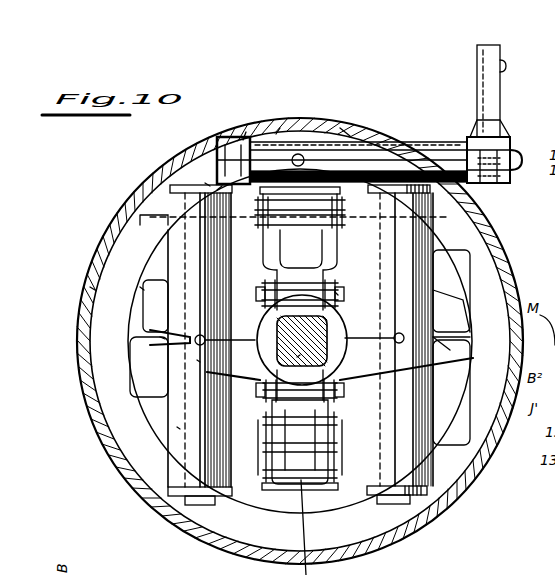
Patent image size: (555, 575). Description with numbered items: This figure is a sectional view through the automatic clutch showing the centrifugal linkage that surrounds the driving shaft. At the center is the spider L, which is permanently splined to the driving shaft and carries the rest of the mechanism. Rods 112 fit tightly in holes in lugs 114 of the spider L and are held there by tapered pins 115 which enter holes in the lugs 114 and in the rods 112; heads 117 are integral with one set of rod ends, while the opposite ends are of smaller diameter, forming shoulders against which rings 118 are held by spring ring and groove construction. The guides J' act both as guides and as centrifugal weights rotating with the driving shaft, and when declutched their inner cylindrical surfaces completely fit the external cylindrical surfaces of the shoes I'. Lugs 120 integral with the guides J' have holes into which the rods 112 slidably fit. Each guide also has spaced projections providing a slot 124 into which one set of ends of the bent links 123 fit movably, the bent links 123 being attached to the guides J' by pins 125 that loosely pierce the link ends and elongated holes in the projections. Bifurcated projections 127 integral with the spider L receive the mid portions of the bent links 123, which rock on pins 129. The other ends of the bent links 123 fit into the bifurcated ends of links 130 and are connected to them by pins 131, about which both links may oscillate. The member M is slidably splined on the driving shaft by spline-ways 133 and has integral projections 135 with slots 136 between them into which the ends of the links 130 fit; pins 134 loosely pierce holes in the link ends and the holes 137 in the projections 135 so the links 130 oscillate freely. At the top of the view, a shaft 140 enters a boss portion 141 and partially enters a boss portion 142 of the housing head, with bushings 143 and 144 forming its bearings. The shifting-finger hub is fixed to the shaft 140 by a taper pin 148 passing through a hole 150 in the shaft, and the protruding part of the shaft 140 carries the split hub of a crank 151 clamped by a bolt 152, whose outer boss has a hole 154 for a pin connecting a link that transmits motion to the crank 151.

The rods 112 is at (193, 468).
The lugs 114 is at (173, 357).
The tapered pins 115 is at (90, 287).
The heads 117 is at (395, 215).
The rings 118 is at (167, 175).
The lugs 120 is at (177, 263).
The bent links 123 is at (300, 203).
The slot 124 is at (217, 190).
The pins 125 is at (205, 183).
The bifurcated projections 127 is at (300, 345).
The pins 129 is at (200, 447).
The links 130 is at (205, 265).
The pins 131 is at (330, 303).
The spline-ways 133 is at (276, 343).
The pins 134 is at (330, 298).
The projections 135 is at (282, 298).
The slots 136 is at (299, 341).
The holes 137 is at (299, 367).
The shaft 140 is at (280, 130).
The boss portion 141 is at (408, 142).
The boss portion 142 is at (230, 157).
The bushing 143 is at (347, 130).
The bushing 144 is at (248, 133).
The taper pin 148 is at (532, 147).
The hole 150 is at (298, 154).
The crank 151 is at (500, 143).
The bolt 152 is at (492, 143).
The hole 154 is at (485, 60).
The guides J' is at (97, 258).
The shoes I' is at (431, 314).
The member M is at (160, 337).
The spider L is at (197, 360).